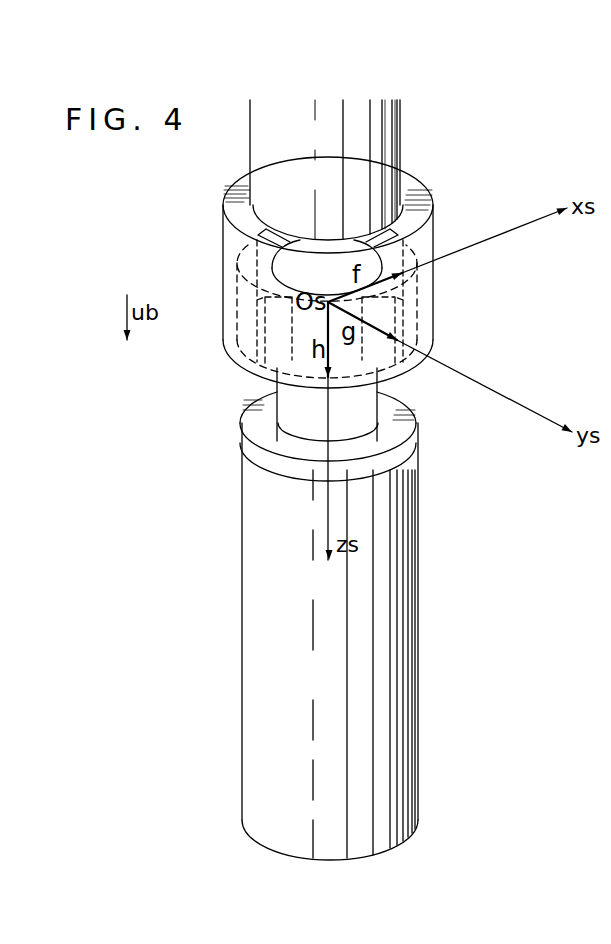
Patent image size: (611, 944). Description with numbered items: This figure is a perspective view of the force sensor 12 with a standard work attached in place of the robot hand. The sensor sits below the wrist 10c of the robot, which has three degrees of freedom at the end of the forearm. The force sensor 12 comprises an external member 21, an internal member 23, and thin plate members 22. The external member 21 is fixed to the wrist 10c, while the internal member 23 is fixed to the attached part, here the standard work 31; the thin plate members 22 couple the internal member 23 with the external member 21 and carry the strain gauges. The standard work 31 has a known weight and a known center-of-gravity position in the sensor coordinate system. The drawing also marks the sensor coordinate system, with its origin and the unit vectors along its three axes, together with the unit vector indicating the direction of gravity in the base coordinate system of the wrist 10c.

The wrist 10c is at (397, 128).
The force sensor 12 is at (441, 190).
The external member 21 is at (427, 233).
The thin plate members 22 is at (417, 293).
The internal member 23 is at (414, 424).
The standard work 31 is at (272, 680).